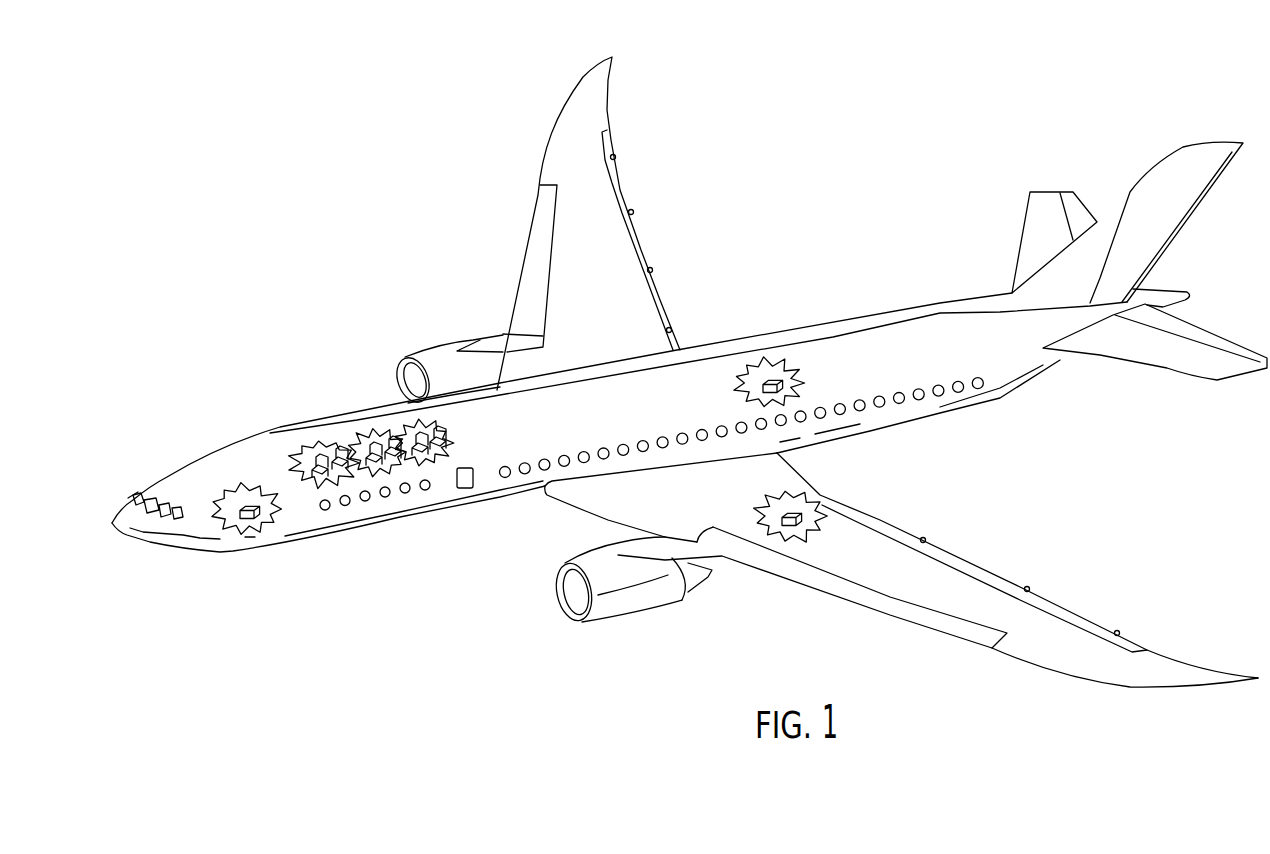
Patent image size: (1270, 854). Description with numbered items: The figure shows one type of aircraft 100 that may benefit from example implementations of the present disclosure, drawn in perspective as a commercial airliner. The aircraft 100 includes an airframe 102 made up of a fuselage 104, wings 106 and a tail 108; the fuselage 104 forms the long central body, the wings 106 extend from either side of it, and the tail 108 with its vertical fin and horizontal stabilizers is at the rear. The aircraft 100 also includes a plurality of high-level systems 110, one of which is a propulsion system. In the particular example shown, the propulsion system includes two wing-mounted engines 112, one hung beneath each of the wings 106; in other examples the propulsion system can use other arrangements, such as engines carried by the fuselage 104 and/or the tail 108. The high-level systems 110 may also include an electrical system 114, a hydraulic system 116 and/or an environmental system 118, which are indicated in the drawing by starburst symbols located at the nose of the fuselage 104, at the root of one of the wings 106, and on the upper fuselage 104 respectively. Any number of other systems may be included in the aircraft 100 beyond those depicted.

The aircraft 100 is at (355, 257).
The airframe 102 is at (367, 392).
The fuselage 104 is at (393, 523).
The wings 106 is at (548, 158).
The tail 108 is at (958, 236).
The high-level systems 110 is at (1140, 520).
The wing-mounted engines 112 is at (452, 348).
The electrical system 114 is at (247, 482).
The hydraulic system 116 is at (790, 496).
The environmental system 118 is at (760, 367).